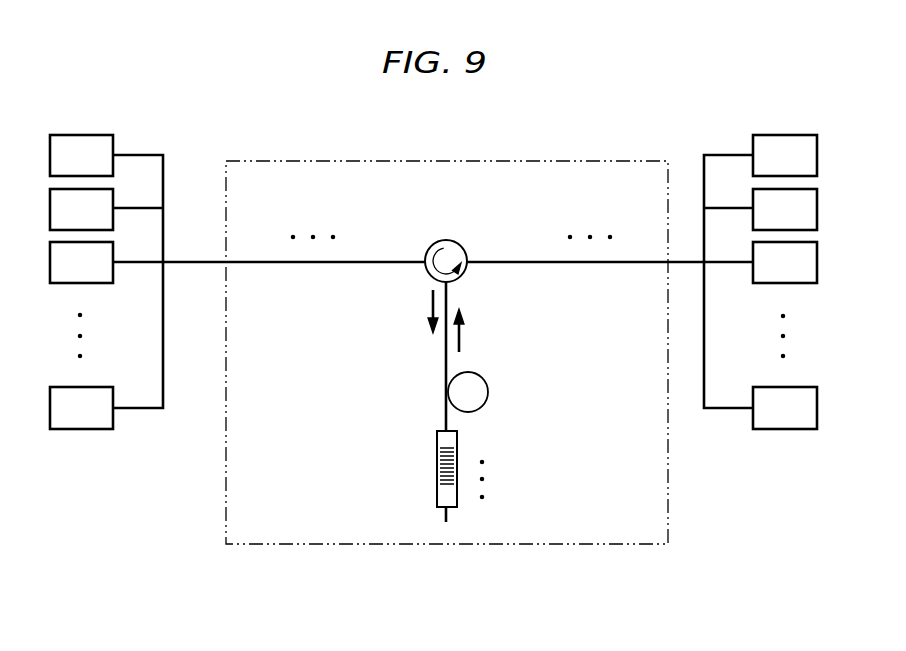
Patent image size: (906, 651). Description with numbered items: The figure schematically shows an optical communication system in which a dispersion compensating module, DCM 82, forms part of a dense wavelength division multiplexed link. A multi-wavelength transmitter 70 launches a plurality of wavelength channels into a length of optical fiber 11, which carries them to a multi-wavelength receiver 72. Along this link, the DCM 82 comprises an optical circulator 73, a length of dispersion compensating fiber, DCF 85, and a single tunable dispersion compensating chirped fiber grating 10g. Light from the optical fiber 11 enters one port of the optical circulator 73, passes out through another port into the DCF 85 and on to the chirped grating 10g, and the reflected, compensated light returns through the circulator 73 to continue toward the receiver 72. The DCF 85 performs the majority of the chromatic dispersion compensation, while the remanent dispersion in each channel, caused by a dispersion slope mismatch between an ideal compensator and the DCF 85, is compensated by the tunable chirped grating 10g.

The multi-wavelength transmitter 70 is at (82, 430).
The multi-wavelength receiver 72 is at (720, 410).
The optical circulator 73 is at (440, 240).
The dispersion compensating fiber 85 is at (500, 398).
The optical fiber 11 is at (573, 264).
The tunable dispersion compensating chirped fiber grating 10g is at (417, 473).
The dispersion compensating module 82 is at (317, 546).